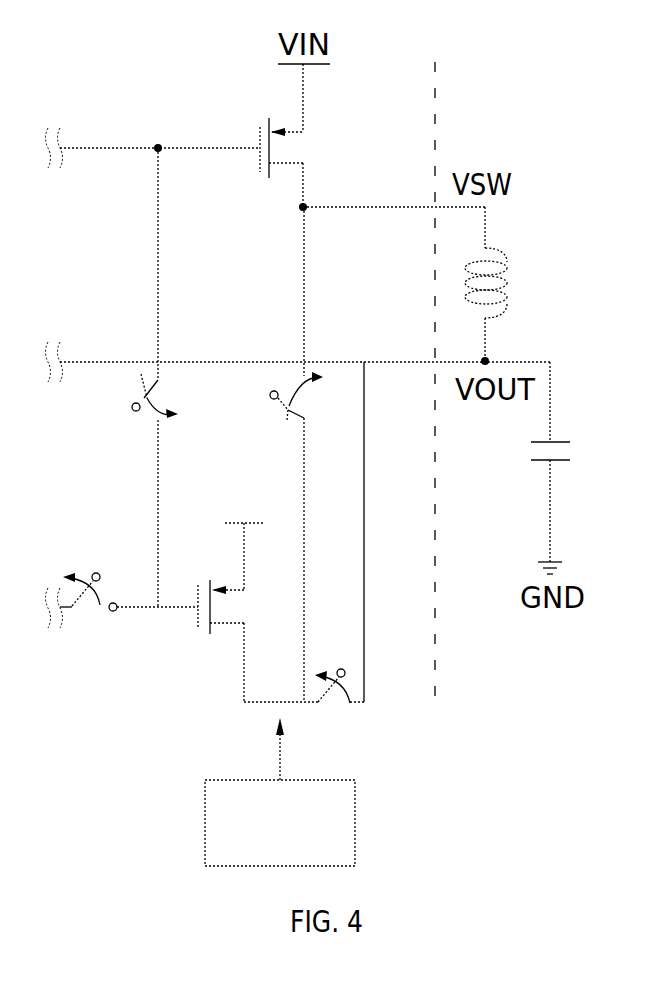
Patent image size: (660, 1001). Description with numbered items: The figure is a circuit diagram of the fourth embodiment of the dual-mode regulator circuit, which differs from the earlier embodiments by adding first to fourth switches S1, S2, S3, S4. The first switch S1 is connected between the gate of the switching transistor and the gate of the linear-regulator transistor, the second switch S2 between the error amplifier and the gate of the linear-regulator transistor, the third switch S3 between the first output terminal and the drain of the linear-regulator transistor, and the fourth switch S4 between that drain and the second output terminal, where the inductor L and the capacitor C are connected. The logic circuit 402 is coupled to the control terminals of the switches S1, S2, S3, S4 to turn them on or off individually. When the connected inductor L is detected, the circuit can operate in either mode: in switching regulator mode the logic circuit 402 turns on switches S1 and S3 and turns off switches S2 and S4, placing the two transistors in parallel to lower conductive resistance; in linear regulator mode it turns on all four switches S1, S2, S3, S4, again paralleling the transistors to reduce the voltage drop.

The logic circuit 402 is at (343, 855).
The first switch S1 is at (166, 395).
The second switch S2 is at (88, 612).
The third switch S3 is at (305, 396).
The fourth switch S4 is at (332, 708).
The inductor L is at (504, 284).
The capacitor C is at (568, 462).